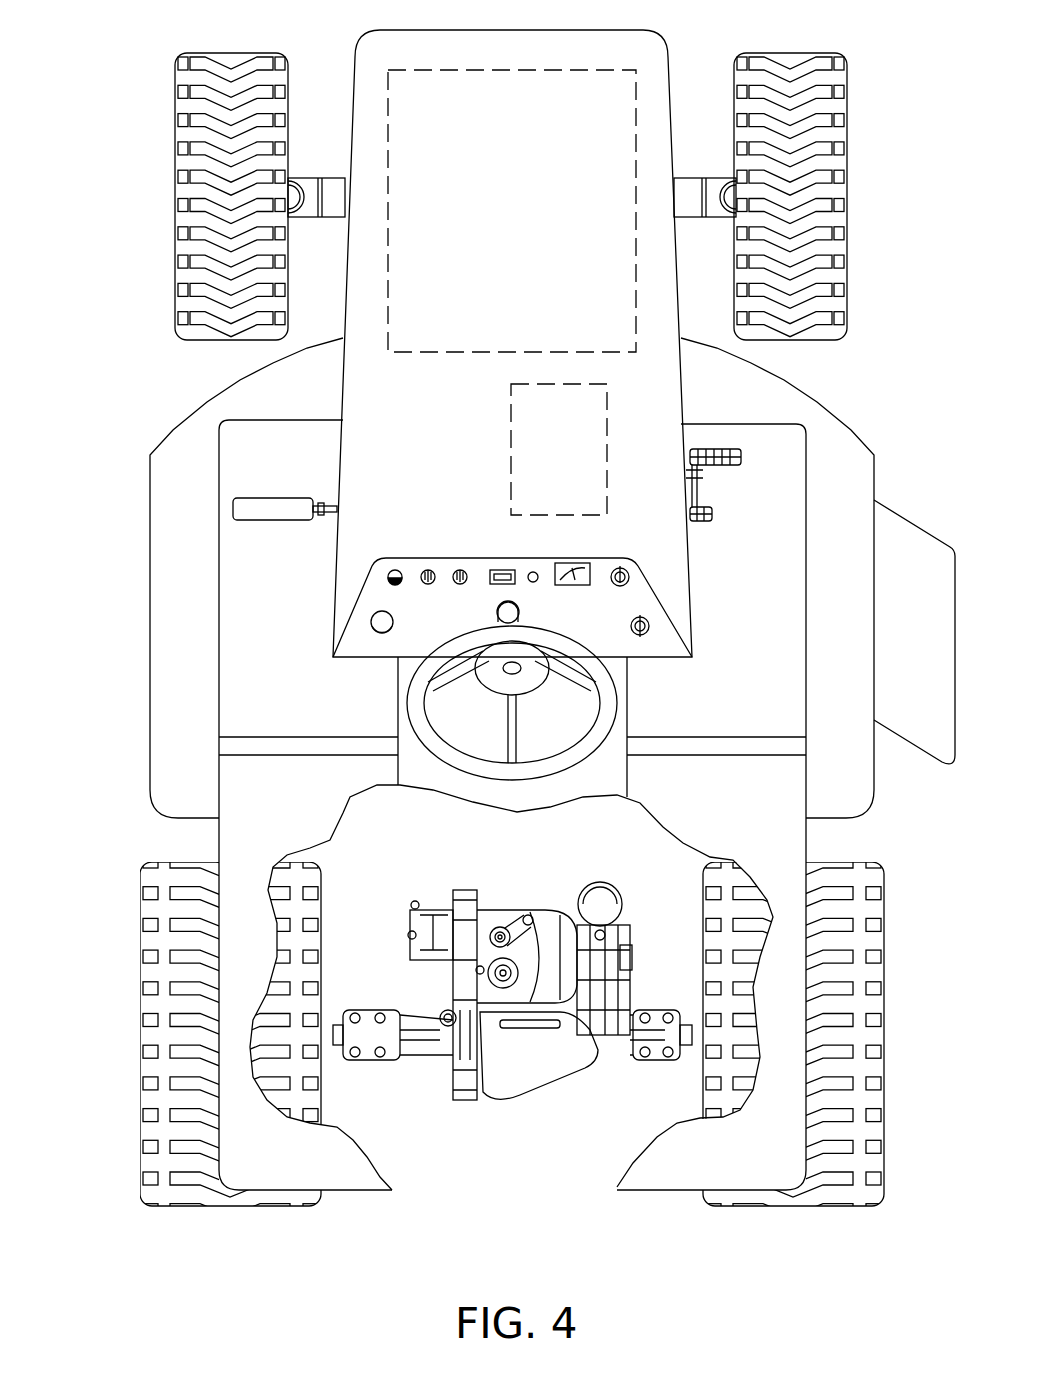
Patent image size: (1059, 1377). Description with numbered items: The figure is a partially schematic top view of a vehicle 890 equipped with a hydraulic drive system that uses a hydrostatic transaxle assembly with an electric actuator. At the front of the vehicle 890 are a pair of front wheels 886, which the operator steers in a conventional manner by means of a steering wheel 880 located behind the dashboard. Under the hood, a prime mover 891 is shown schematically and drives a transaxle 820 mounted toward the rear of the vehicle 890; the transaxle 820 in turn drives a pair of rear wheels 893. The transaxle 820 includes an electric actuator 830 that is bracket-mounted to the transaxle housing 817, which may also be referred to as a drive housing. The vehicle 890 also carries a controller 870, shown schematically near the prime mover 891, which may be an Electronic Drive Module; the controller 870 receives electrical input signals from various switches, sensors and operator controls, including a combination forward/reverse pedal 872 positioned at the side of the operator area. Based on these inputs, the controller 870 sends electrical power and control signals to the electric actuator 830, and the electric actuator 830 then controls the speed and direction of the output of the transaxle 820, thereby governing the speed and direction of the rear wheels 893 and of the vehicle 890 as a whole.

The vehicle 890 is at (122, 62).
The front wheels 886 is at (240, 52).
The rear wheels 893 is at (190, 1208).
The prime mover 891 is at (455, 355).
The controller 870 is at (511, 452).
The combination forward/reverse pedal 872 is at (716, 448).
The steering wheel 880 is at (590, 752).
The transaxle housing 817 is at (543, 903).
The electric actuator 830 is at (640, 930).
The transaxle 820 is at (533, 1107).